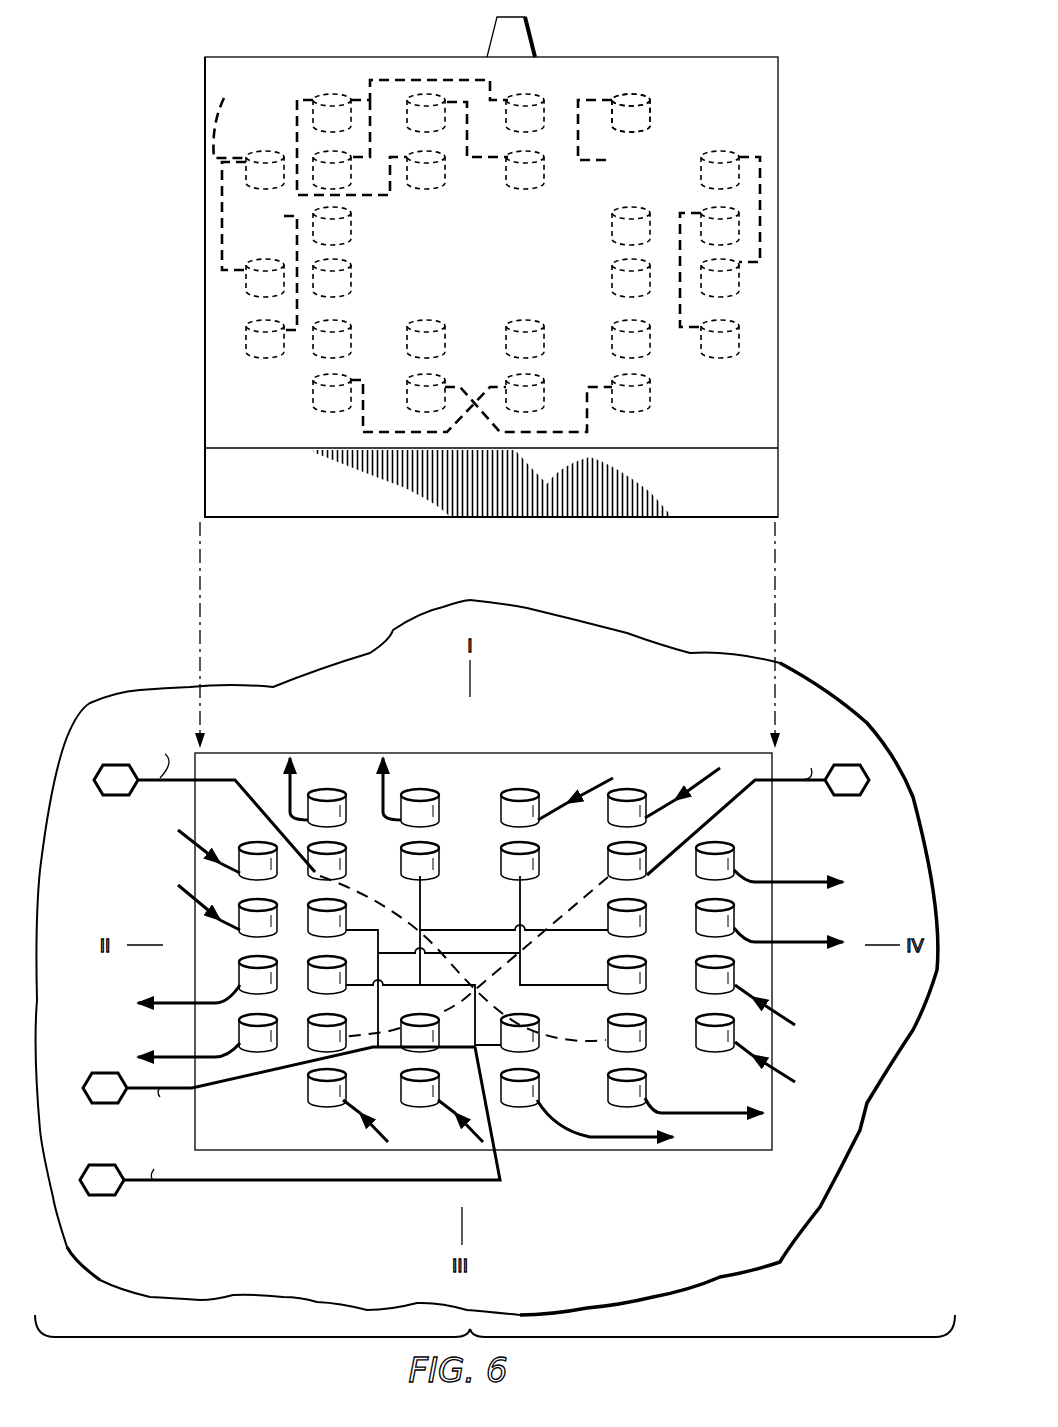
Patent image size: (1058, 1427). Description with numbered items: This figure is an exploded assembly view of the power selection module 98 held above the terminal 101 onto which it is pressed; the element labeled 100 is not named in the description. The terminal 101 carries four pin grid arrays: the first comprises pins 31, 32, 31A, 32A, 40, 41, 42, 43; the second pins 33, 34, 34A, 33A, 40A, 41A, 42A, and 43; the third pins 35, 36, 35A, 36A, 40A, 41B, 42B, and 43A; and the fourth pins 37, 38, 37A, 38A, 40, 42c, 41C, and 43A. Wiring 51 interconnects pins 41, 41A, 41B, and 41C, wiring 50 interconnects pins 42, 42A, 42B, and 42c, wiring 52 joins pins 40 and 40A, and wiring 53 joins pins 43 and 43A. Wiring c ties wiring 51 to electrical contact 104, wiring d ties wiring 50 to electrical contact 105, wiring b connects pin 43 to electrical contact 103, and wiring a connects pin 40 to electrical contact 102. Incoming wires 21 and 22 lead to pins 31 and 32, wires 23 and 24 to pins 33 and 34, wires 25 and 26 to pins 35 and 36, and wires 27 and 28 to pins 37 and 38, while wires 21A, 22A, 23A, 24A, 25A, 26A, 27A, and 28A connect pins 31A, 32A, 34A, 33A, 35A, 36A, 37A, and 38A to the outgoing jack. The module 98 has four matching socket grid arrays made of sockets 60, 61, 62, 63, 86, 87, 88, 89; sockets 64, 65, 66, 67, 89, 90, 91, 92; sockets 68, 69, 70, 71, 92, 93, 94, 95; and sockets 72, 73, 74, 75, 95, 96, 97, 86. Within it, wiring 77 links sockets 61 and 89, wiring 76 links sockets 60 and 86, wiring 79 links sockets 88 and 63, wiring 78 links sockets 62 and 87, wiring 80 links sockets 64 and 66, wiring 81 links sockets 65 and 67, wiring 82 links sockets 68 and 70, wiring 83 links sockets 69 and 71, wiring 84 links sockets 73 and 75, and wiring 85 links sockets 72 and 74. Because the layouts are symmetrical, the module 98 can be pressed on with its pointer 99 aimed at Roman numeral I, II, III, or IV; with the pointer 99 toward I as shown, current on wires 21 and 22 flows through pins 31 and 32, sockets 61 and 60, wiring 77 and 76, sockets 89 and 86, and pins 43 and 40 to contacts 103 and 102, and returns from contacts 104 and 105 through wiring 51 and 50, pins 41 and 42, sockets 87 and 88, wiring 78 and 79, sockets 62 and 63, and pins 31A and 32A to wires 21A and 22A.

The module 98 is at (660, 48).
The pointer 99 is at (530, 22).
The pattern frame 100 is at (206, 392).
The terminal 101 is at (299, 1210).
The electrical contact 102 is at (857, 765).
The electrical contact 103 is at (127, 764).
The electrical contact 104 is at (106, 1073).
The electrical contact 105 is at (100, 1166).
The socket 60 is at (649, 97).
The socket 61 is at (543, 96).
The socket 62 is at (410, 108).
The socket 63 is at (316, 97).
The socket 64 is at (262, 152).
The socket 65 is at (258, 207).
The socket 66 is at (246, 279).
The socket 67 is at (246, 331).
The socket 68 is at (313, 398).
The socket 69 is at (407, 384).
The socket 70 is at (544, 384).
The socket 71 is at (650, 390).
The socket 72 is at (738, 346).
The socket 73 is at (739, 281).
The socket 74 is at (703, 206).
The socket 75 is at (706, 152).
The wiring 76 is at (612, 100).
The wiring 77 is at (371, 82).
The wiring 78 is at (486, 170).
The wiring 79 is at (391, 196).
The wiring 80 is at (229, 117).
The wiring 81 is at (293, 336).
The wiring 82 is at (363, 425).
The wiring 83 is at (587, 426).
The wiring 84 is at (760, 157).
The wiring 85 is at (702, 331).
The socket 86 is at (612, 172).
The socket 87 is at (518, 185).
The socket 88 is at (444, 180).
The socket 89 is at (351, 166).
The socket 90 is at (351, 227).
The socket 91 is at (351, 272).
The socket 92 is at (351, 333).
The socket 93 is at (441, 324).
The socket 94 is at (544, 326).
The socket 95 is at (612, 330).
The socket 96 is at (612, 266).
The socket 97 is at (612, 221).
The wire 21 is at (585, 796).
The wire 22 is at (695, 796).
The wire 23 is at (220, 843).
The wire 24 is at (218, 905).
The wire 25 is at (361, 1125).
The wire 26 is at (466, 1125).
The wire 27 is at (790, 1020).
The wire 28 is at (790, 1078).
The wire 21A is at (385, 790).
The wire 22A is at (288, 790).
The wire 23A is at (180, 1056).
The wire 24A is at (178, 1002).
The wire 25A is at (720, 1114).
The wire 26A is at (560, 1130).
The wire 27A is at (797, 941).
The wire 28A is at (810, 881).
The pin 31 is at (520, 790).
The pin 32 is at (627, 790).
The pin 33 is at (258, 844).
The pin 34 is at (258, 905).
The pin 35 is at (322, 1101).
The pin 36 is at (418, 1101).
The pin 37 is at (735, 972).
The pin 38 is at (722, 1041).
The pin 31A is at (439, 802).
The pin 32A is at (336, 793).
The pin 33A is at (241, 1018).
The pin 34A is at (239, 967).
The pin 35A is at (646, 1091).
The pin 36A is at (540, 1090).
The pin 37A is at (735, 913).
The pin 38A is at (735, 852).
The pin 40 is at (641, 850).
The pin 41 is at (533, 850).
The pin 42 is at (433, 850).
The pin 43 is at (346, 850).
The pin 40A is at (313, 1022).
The pin 41A is at (312, 905).
The pin 42A is at (310, 967).
The pin 41B is at (414, 1017).
The pin 42B is at (540, 1020).
The pin 41C is at (646, 976).
The pin 42c is at (646, 912).
The pin 43A is at (646, 1031).
The wiring 50 is at (482, 930).
The wiring 51 is at (522, 925).
The wiring 52 is at (549, 951).
The wiring 53 is at (393, 903).